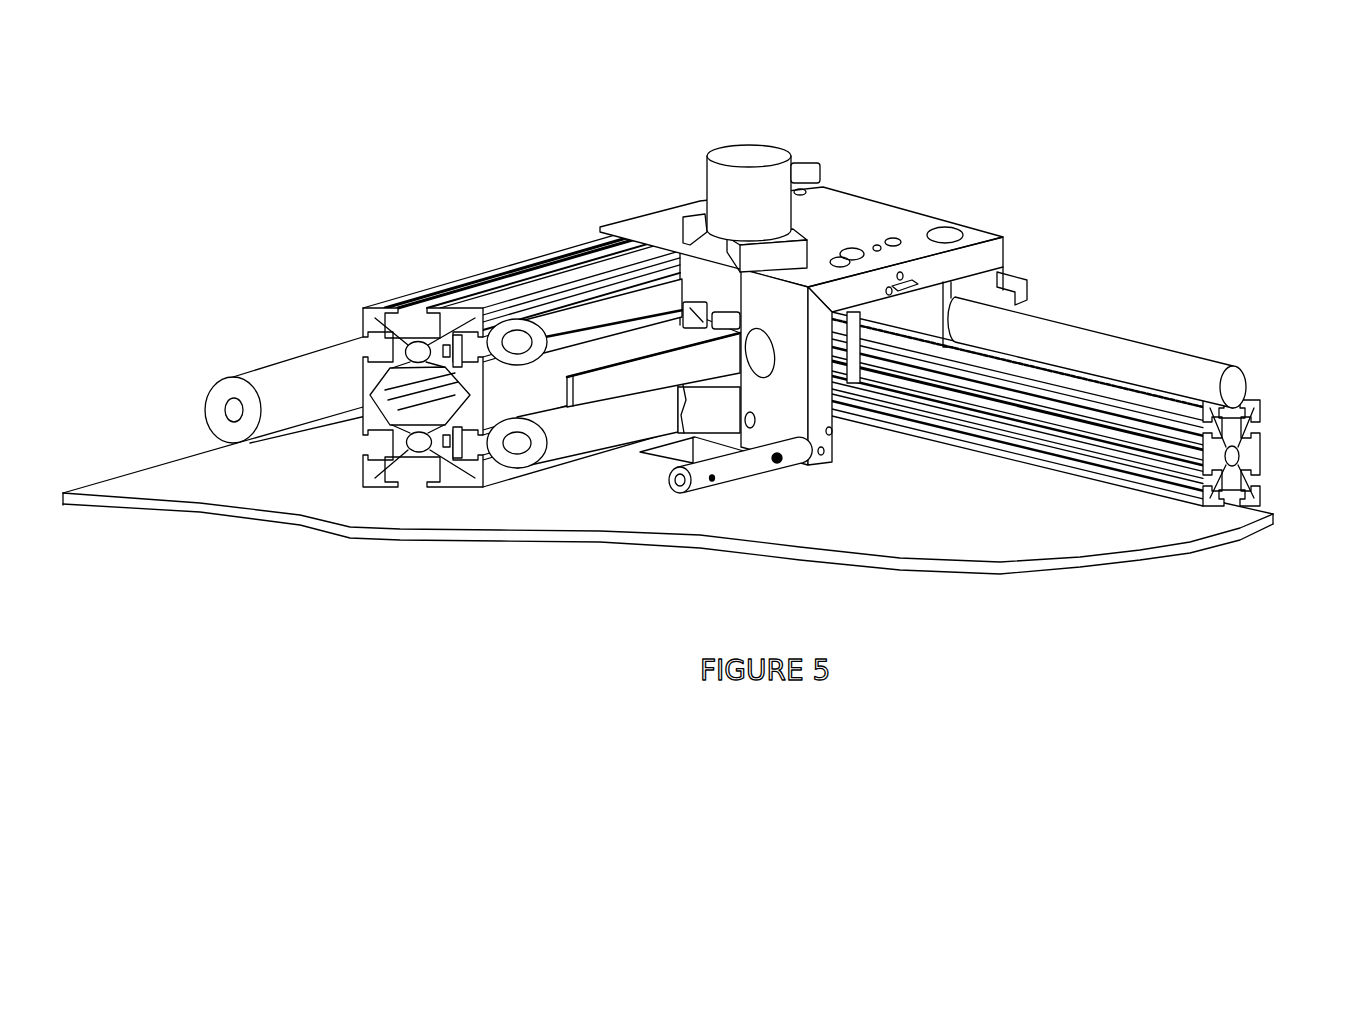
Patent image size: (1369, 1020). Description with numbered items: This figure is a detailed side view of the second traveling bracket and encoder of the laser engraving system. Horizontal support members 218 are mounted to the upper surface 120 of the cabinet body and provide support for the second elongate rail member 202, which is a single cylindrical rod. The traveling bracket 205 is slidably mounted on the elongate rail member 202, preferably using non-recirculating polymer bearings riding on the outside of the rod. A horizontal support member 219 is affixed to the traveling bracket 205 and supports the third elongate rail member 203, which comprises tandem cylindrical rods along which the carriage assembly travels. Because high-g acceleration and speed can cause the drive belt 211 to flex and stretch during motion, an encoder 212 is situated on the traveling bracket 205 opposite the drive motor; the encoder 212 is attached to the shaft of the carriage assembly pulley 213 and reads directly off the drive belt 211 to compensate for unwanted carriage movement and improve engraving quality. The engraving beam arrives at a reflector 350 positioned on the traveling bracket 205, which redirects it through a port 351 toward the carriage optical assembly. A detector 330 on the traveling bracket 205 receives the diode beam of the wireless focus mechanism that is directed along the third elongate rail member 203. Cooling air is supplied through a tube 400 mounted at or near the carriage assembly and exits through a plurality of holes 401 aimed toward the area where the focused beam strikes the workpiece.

The upper surface 120 is at (1162, 532).
The horizontal support member 219 is at (372, 313).
The third elongate rail member 203 is at (552, 323).
The drive belt 211 is at (610, 387).
The carriage assembly pulley 213 is at (737, 322).
The encoder 212 is at (755, 158).
The traveling bracket member 205 is at (895, 217).
The port 351 is at (767, 347).
The reflector 350 is at (855, 375).
The second elongate rail member 202 is at (1088, 350).
The horizontal support member 218 is at (1253, 418).
The tube 400 is at (732, 475).
The holes 401 is at (783, 462).
The detector 330 is at (752, 426).